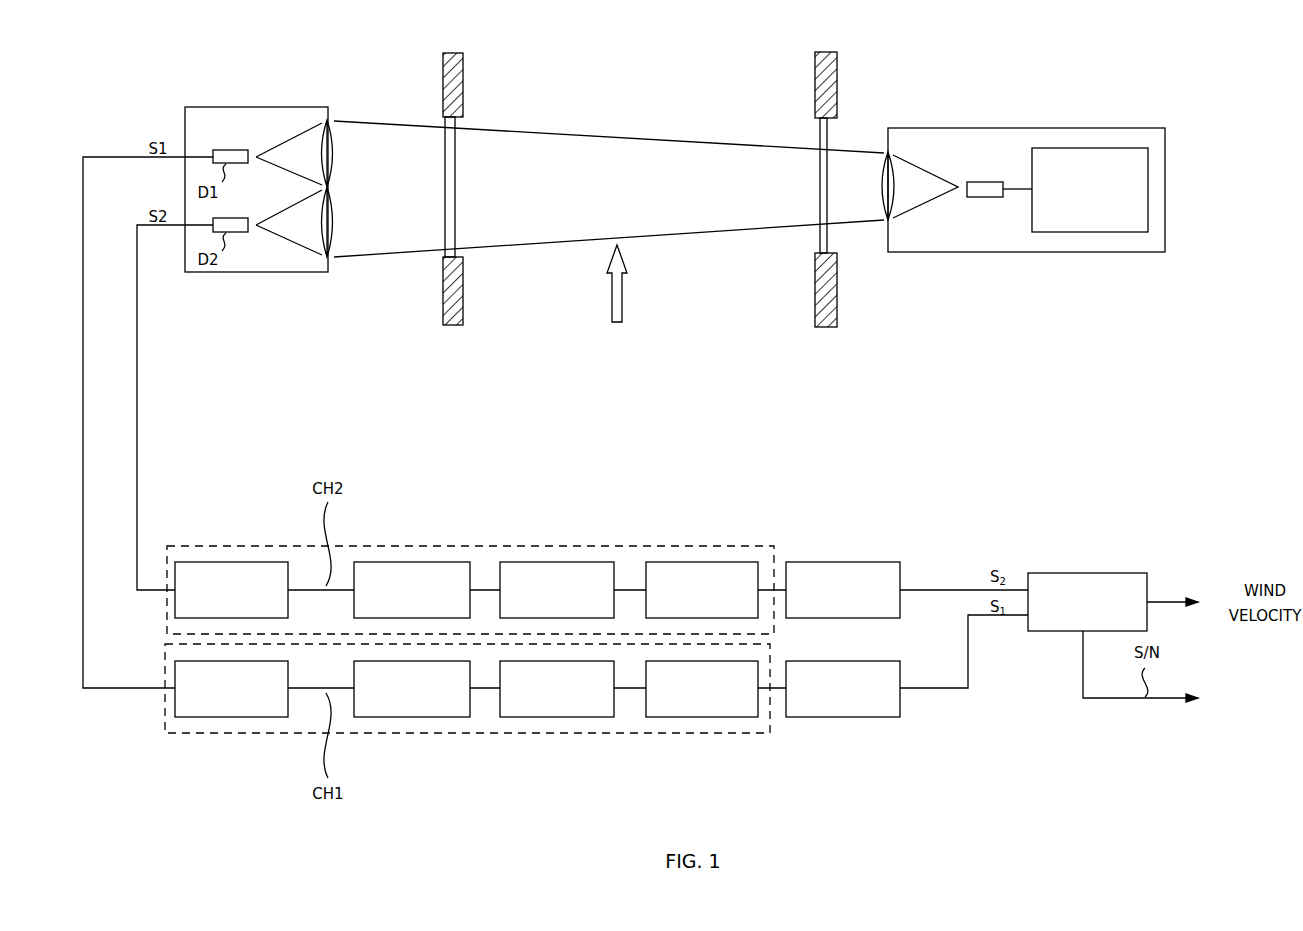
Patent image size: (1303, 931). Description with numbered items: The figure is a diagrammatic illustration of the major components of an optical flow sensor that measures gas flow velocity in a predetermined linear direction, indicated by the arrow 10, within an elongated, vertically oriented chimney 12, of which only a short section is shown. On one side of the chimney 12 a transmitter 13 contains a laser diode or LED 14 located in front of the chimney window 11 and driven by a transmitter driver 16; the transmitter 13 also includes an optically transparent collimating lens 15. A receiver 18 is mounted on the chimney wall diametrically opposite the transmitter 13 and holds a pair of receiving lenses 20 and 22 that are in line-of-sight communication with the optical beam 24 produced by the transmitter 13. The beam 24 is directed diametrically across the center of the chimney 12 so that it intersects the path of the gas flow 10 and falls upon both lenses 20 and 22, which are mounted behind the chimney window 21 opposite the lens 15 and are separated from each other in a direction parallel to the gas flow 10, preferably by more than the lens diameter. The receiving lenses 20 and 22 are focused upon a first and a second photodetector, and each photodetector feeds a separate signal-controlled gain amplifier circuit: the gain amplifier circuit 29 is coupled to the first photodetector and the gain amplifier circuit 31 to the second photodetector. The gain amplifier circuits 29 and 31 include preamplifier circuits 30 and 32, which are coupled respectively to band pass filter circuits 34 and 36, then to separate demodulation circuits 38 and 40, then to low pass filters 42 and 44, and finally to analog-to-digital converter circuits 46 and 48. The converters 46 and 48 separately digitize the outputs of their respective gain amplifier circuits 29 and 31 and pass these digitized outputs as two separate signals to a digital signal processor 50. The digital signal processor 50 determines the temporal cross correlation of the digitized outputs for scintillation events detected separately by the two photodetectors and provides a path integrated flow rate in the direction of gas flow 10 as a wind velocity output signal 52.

The arrow indicating predetermined linear direction of gas flow 10 is at (622, 296).
The chimney window 11 is at (810, 185).
The chimney 12 is at (838, 285).
The transmitter 13 is at (1140, 128).
The laser diode or LED 14 is at (986, 182).
The collimating lens 15 is at (905, 210).
The transmitter driver 16 is at (1050, 148).
The receiver 18 is at (255, 107).
The receiving lens 20 is at (345, 153).
The chimney window 21 is at (456, 185).
The receiving lens 22 is at (345, 220).
The optical beam 24 is at (653, 145).
The gain amplifier circuit 29 is at (485, 740).
The preamplifier circuit 30 is at (230, 718).
The gain amplifier circuit 31 is at (485, 540).
The preamplifier circuit 32 is at (228, 561).
The band pass filter circuit 34 is at (413, 718).
The band pass filter circuit 36 is at (413, 561).
The demodulation circuit 38 is at (556, 718).
The demodulation circuit 40 is at (556, 561).
The low pass filter 42 is at (710, 718).
The low pass filter 44 is at (710, 561).
The analog-to-digital converter circuit 46 is at (841, 718).
The analog-to-digital converter circuit 48 is at (841, 561).
The digital signal processor 50 is at (1083, 572).
The wind velocity output signal 52 is at (1163, 598).